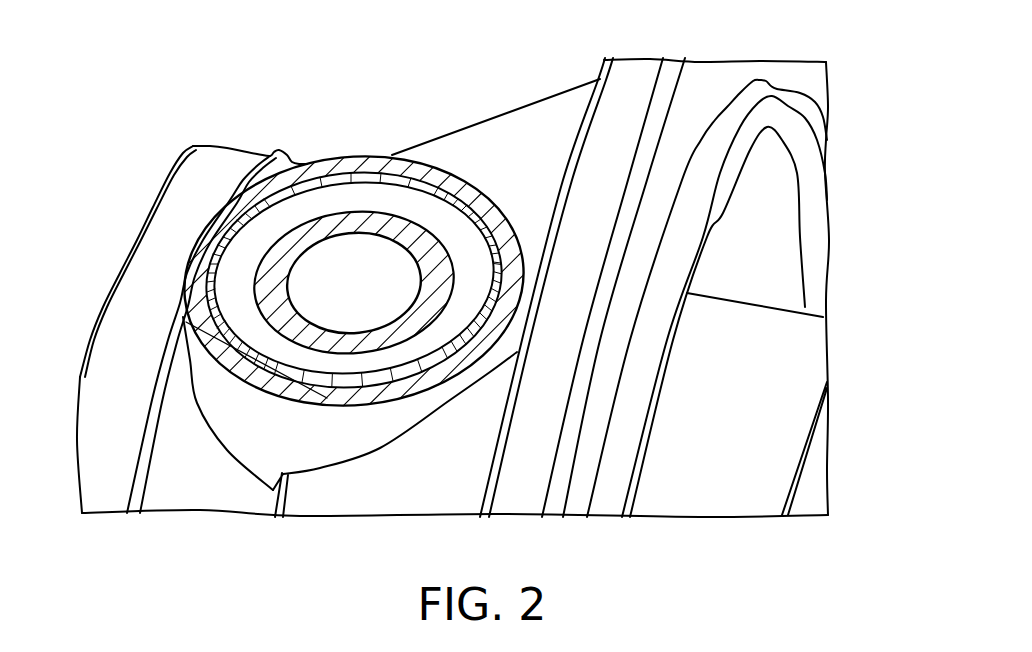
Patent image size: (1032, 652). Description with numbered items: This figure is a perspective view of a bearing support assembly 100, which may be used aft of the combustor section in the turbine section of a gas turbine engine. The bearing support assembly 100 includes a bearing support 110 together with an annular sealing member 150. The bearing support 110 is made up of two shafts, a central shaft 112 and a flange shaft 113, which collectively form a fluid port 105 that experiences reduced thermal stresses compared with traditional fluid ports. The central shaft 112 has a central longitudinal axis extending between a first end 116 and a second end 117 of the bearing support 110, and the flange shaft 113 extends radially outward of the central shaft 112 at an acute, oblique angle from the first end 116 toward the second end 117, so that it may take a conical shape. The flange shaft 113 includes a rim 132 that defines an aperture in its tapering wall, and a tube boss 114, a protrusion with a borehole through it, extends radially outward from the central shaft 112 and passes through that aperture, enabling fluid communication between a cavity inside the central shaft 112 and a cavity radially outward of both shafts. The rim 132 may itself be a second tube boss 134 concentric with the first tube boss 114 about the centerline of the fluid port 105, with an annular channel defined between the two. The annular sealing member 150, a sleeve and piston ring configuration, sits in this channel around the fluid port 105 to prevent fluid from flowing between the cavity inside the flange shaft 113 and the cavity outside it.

The bearing support assembly 100 is at (104, 78).
The fluid port 105 is at (346, 268).
The bearing support 110 is at (365, 112).
The central shaft 112 is at (813, 345).
The flange shaft 113 is at (528, 132).
The tube boss 114 is at (273, 292).
The first end 116 is at (100, 540).
The second end 117 is at (796, 541).
The rim 132 is at (355, 400).
The second tube boss 134 is at (310, 442).
The annular sealing member 150 is at (255, 252).